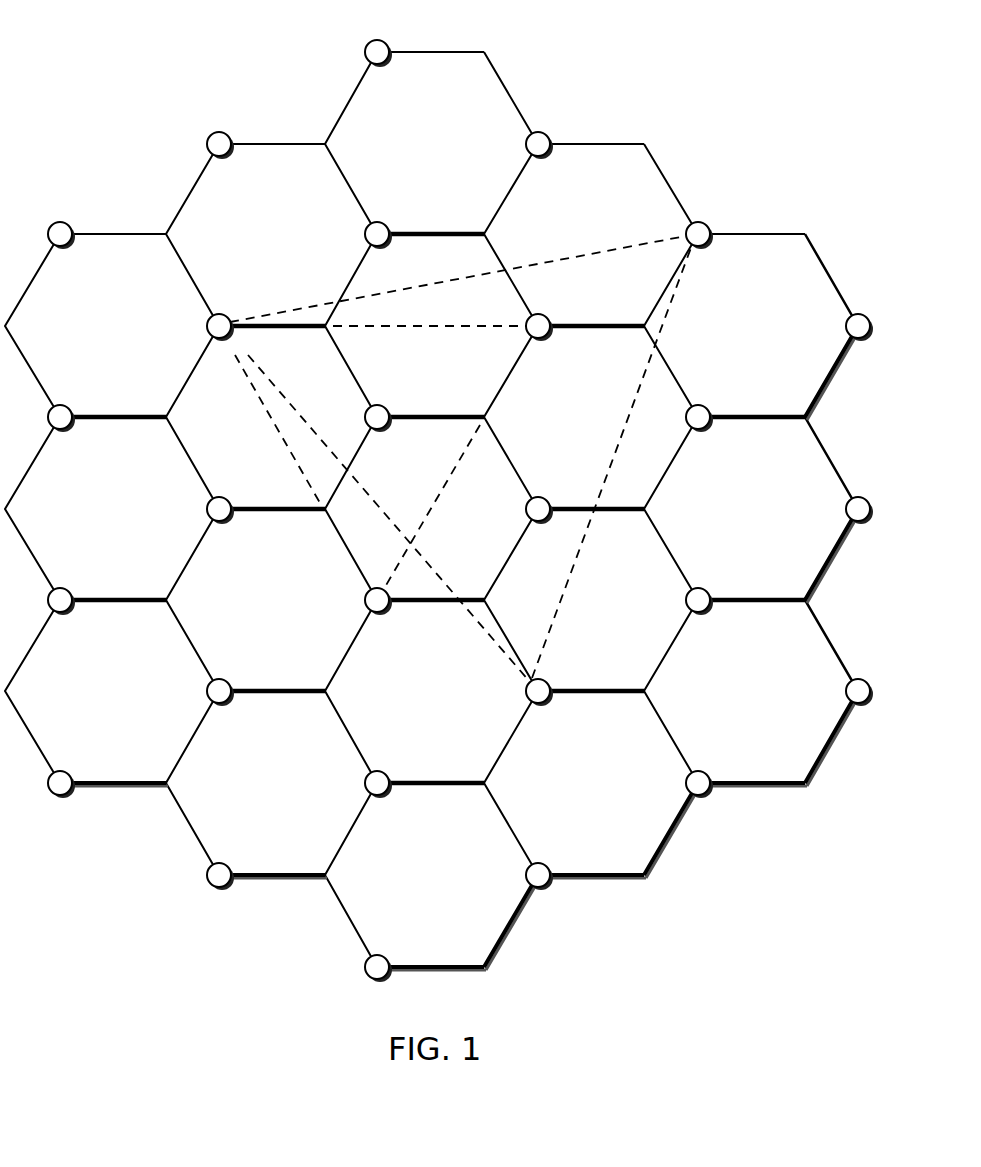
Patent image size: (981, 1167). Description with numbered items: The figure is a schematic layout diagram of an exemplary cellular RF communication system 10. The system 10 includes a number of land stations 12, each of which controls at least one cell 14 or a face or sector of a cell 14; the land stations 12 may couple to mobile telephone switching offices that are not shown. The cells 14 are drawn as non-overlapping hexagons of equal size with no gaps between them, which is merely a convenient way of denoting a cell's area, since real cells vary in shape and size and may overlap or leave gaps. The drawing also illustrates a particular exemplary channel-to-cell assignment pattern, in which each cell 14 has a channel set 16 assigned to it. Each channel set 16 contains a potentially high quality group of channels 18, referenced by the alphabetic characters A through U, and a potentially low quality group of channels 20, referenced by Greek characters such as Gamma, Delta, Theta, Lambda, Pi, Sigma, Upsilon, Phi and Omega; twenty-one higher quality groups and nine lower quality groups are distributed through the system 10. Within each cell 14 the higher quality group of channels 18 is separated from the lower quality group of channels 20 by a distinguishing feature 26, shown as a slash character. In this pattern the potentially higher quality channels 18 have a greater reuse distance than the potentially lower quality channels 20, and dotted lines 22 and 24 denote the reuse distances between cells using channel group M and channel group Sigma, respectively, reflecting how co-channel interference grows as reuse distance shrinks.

The cellular RF communication system 10 is at (439, 522).
The land station 12 is at (378, 980).
The cell 14 is at (486, 969).
The channel set 16 is at (388, 832).
The potentially high quality group of channels 18 is at (225, 843).
The potentially low quality group of channels 20 is at (568, 731).
The dotted line 22 is at (516, 266).
The dotted line 24 is at (428, 516).
The distinguishing feature 26 is at (60, 641).